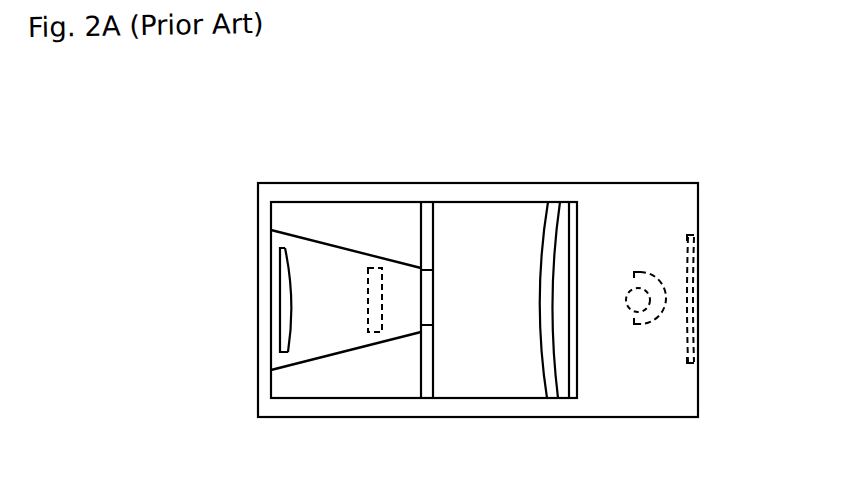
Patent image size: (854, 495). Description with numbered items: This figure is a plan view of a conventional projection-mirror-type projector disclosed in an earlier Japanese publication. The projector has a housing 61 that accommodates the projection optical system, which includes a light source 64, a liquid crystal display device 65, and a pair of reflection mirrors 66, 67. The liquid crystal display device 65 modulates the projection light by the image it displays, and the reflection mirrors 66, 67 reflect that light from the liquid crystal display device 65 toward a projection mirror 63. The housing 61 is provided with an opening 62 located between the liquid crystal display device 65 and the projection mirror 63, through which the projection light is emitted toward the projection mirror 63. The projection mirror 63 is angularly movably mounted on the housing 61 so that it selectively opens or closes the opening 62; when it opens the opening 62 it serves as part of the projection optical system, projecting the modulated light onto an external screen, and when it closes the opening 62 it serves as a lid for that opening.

The housing 61 is at (698, 203).
The opening 62 is at (299, 203).
The projection mirror 63 is at (553, 208).
The light source 64 is at (650, 322).
The liquid crystal display device 65 is at (376, 270).
The reflection mirror 66 is at (693, 243).
The reflection mirror 67 is at (292, 320).